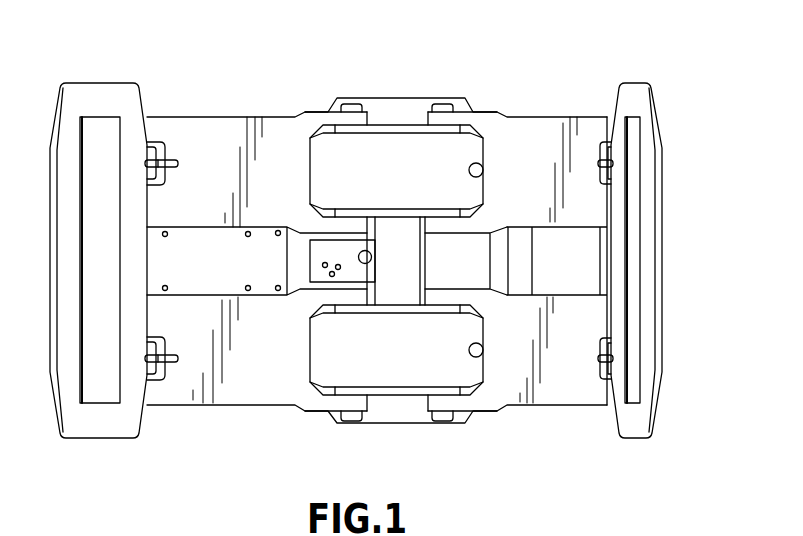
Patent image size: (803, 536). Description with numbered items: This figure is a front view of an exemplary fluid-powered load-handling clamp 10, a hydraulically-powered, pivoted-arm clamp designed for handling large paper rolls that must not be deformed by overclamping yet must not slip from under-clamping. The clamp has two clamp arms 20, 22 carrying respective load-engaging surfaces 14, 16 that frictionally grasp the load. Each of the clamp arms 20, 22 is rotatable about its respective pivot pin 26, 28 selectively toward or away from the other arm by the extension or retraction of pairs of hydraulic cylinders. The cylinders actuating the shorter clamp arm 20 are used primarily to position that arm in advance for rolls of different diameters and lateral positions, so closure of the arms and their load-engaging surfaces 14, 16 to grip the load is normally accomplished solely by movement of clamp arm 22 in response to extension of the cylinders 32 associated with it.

The load-handling clamp 10 is at (529, 50).
The load-engaging surface 14 is at (103, 83).
The load-engaging surface 16 is at (636, 83).
The clamp arm 20 is at (232, 117).
The clamp arm 22 is at (553, 405).
The pivot pin 26 is at (353, 104).
The pivot pin 28 is at (444, 104).
The hydraulic cylinders 32 is at (469, 170).